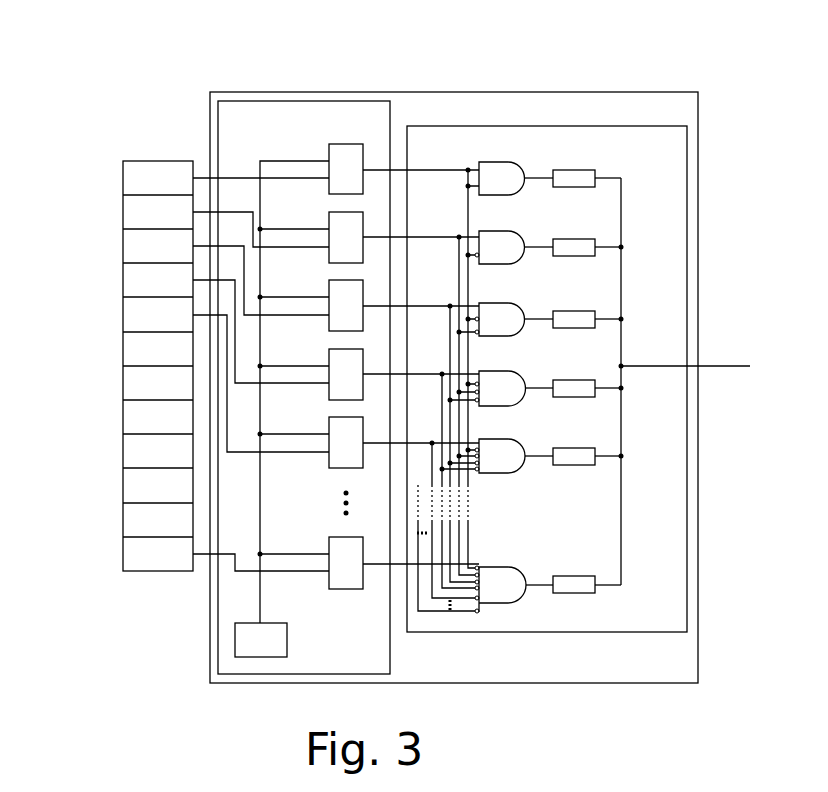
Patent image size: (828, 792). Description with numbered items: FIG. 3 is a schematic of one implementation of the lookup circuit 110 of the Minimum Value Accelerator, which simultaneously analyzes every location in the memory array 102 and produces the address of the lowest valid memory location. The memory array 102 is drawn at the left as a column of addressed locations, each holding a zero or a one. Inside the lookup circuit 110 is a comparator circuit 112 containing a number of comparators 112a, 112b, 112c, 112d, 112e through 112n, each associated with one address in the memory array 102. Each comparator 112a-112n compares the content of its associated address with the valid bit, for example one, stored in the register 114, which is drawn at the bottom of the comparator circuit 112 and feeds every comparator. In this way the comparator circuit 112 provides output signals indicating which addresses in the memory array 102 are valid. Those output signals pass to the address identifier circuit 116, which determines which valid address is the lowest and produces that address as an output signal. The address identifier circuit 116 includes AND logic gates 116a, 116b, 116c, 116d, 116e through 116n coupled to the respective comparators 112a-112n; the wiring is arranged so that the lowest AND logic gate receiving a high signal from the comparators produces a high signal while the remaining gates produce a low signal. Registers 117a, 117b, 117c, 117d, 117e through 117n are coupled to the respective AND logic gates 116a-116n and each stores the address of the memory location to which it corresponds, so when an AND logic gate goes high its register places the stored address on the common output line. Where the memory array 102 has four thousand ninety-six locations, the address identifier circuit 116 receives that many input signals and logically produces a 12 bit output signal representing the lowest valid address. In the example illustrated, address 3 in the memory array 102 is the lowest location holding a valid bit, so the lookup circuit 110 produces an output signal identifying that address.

The memory array 102 is at (128, 131).
The lookup circuit 110 is at (398, 92).
The comparator circuit 112 is at (296, 101).
The comparator 112a is at (329, 146).
The comparator 112b is at (329, 215).
The comparator 112c is at (329, 283).
The comparator 112d is at (329, 351).
The comparator 112e is at (329, 420).
The comparator 112n is at (329, 539).
The register 114 is at (287, 640).
The address identifier circuit 116 is at (625, 126).
The AND logic gate 116a is at (496, 162).
The AND logic gate 116b is at (496, 231).
The AND logic gate 116c is at (496, 303).
The AND logic gate 116d is at (496, 371).
The AND logic gate 116e is at (496, 439).
The AND logic gate 116n is at (496, 567).
The register 117a is at (575, 170).
The register 117b is at (585, 239).
The register 117c is at (585, 311).
The register 117d is at (585, 380).
The register 117e is at (585, 448).
The register 117n is at (585, 576).
The twelve bit output signal 12 is at (719, 372).
The lowest valid address 3 is at (761, 367).